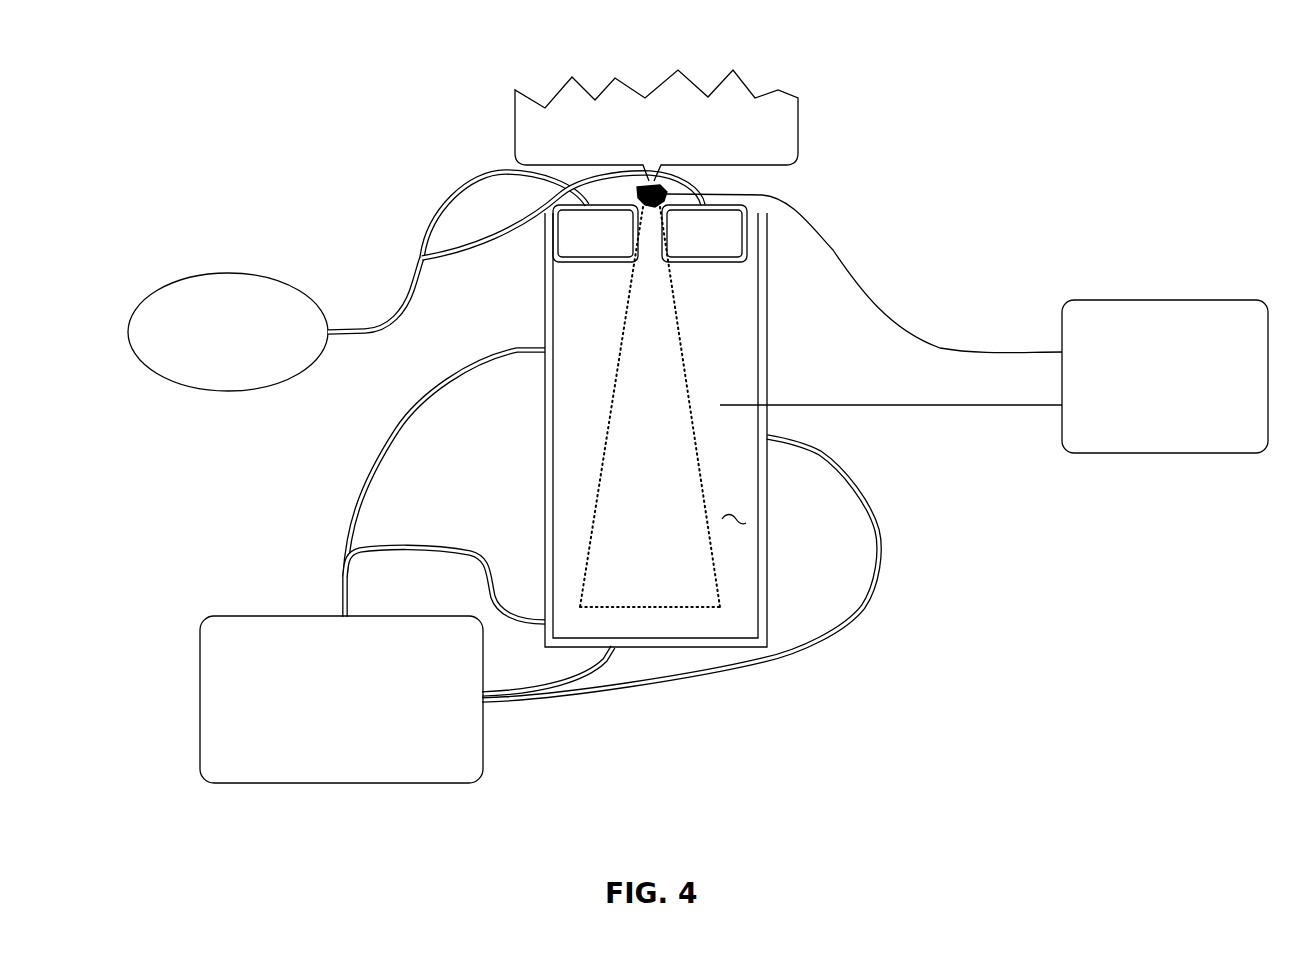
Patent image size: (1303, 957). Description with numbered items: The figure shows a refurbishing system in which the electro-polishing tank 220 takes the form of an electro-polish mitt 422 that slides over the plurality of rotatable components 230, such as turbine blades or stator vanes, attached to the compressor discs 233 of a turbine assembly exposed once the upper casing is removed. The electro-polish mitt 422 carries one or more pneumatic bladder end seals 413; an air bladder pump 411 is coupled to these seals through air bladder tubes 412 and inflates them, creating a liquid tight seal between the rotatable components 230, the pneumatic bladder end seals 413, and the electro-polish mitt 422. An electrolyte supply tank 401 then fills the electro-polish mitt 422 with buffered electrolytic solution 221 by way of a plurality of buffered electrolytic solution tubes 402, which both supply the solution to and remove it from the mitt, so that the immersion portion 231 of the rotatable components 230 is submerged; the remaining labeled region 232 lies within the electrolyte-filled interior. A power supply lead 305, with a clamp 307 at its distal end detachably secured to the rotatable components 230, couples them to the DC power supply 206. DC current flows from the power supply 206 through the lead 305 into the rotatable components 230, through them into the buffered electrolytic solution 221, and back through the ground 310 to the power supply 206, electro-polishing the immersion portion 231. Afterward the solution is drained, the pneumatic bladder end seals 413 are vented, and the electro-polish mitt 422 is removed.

The power supply 206 is at (1172, 333).
The electro-polishing tank 220 is at (767, 487).
The buffered electrolytic solution 221 is at (731, 527).
The rotatable components 230 is at (640, 427).
The immersion portion 231 is at (670, 590).
The spray region 232 is at (640, 368).
The compressor discs 233 is at (685, 105).
The power supply lead 305 is at (883, 303).
The clamp 307 is at (668, 190).
The ground 310 is at (938, 408).
The electrolyte supply tank 401 is at (263, 735).
The buffered electrolytic solution tubes 402 is at (390, 548).
The air bladder pump 411 is at (220, 295).
The air bladder tubes 412 is at (497, 237).
The pneumatic bladder end seals 413 is at (698, 238).
The electro-polish mitt 422 is at (767, 552).